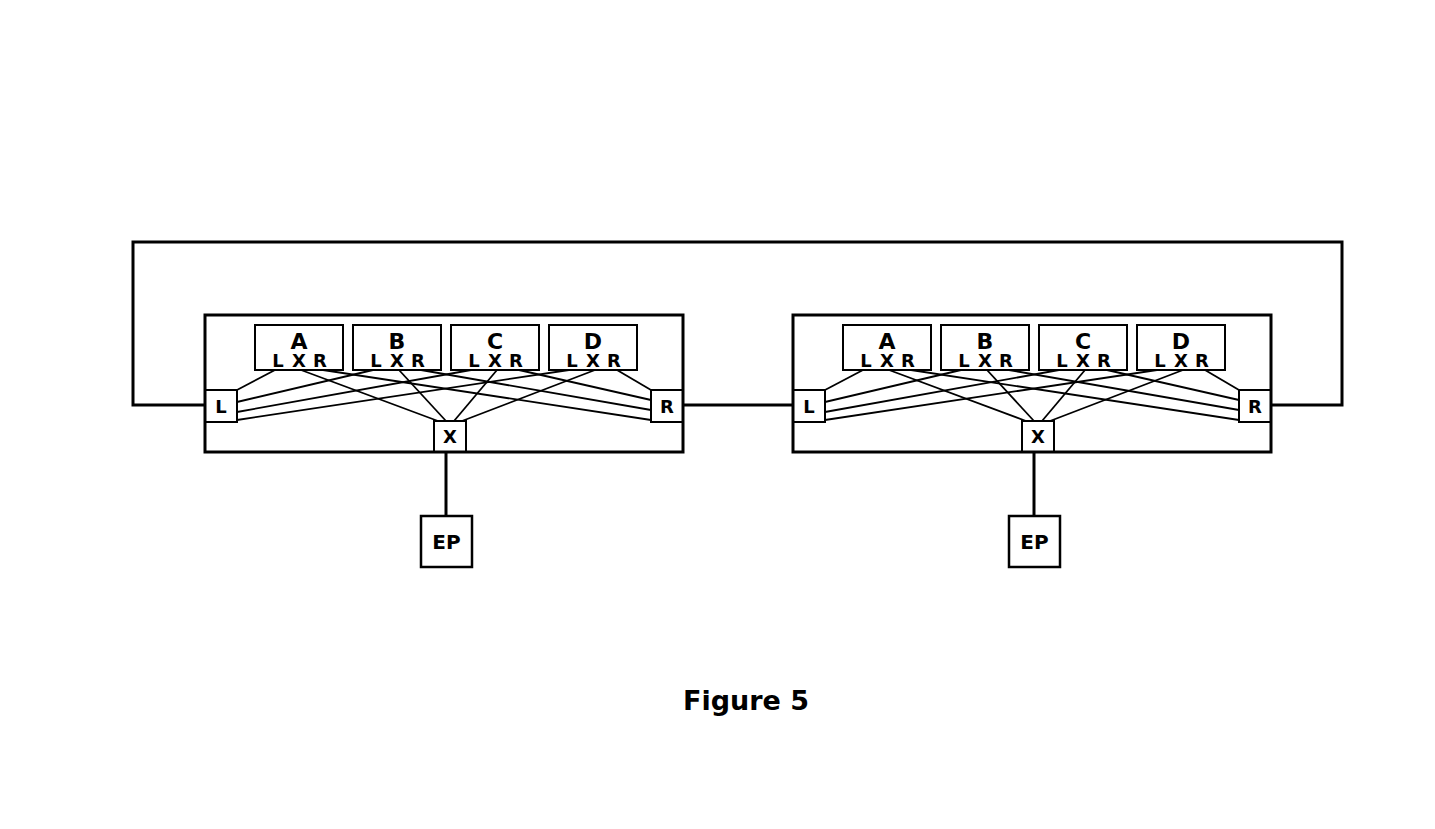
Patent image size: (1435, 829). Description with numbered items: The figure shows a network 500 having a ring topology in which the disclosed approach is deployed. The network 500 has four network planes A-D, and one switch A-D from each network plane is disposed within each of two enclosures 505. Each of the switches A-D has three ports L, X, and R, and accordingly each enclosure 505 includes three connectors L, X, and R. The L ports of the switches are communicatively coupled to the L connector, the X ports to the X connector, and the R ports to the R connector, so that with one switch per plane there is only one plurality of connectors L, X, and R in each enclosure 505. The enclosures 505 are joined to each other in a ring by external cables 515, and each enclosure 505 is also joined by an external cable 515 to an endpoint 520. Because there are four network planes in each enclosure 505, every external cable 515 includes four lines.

The network 500 is at (168, 112).
The enclosure 505 is at (243, 315).
The external cable 515 is at (133, 325).
The endpoint 520 is at (420, 536).